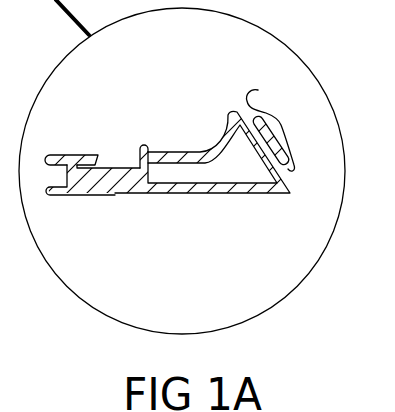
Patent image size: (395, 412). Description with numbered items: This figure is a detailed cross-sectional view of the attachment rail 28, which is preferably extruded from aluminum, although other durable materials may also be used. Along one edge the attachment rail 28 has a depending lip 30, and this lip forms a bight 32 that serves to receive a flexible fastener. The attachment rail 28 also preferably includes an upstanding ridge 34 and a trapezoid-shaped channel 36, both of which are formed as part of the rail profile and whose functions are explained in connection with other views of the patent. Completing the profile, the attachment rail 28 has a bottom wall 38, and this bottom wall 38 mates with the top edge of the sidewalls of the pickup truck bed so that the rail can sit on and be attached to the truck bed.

The attachment rail 28 is at (185, 222).
The depending lip 30 is at (271, 124).
The bight 32 is at (293, 166).
The upstanding ridge 34 is at (147, 145).
The trapezoid-shaped channel 36 is at (103, 168).
The bottom wall 38 is at (118, 196).